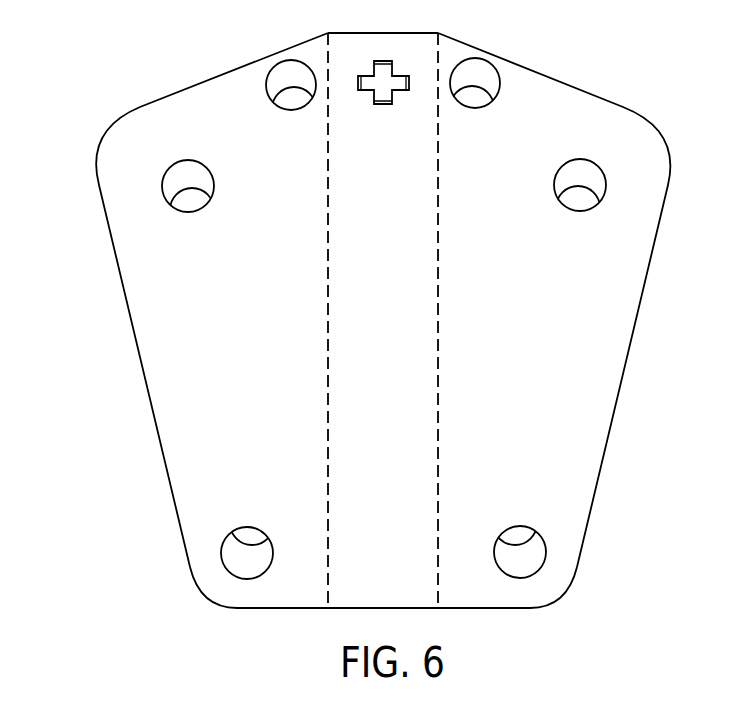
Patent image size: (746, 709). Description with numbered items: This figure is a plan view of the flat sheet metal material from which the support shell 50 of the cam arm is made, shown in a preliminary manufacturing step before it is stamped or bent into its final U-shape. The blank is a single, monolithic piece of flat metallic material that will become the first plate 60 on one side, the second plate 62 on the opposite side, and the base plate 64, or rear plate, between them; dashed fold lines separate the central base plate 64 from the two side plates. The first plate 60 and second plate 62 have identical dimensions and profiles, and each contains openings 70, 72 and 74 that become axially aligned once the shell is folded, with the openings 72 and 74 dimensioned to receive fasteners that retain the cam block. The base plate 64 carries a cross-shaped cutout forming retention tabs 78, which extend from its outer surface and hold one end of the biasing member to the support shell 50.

The support shell 50 is at (108, 396).
The first plate 60 is at (227, 106).
The second plate 62 is at (534, 115).
The base plate 64 is at (408, 58).
The openings 70 is at (238, 532).
The openings 72 is at (200, 200).
The openings 74 is at (280, 107).
The retention tabs 78 is at (372, 75).